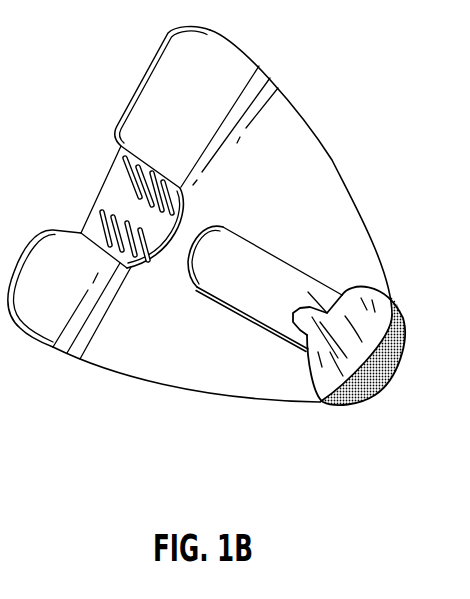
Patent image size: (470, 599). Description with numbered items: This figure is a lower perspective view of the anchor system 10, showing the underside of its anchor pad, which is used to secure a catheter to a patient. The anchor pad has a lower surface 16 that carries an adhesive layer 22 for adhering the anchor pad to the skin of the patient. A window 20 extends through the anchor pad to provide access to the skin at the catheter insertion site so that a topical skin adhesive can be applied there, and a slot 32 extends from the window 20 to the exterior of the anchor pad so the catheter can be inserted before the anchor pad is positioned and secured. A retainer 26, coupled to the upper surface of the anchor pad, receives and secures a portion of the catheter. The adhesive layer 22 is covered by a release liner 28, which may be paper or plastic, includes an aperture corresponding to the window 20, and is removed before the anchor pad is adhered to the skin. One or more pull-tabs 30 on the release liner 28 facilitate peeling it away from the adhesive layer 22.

The anchor system 10 is at (327, 37).
The lower surface 16 is at (400, 335).
The window 20 is at (242, 228).
The adhesive layer 22 is at (380, 377).
The retainer 26 is at (112, 197).
The release liner 28 is at (317, 174).
The pull-tabs 30 is at (308, 292).
The slot 32 is at (391, 310).